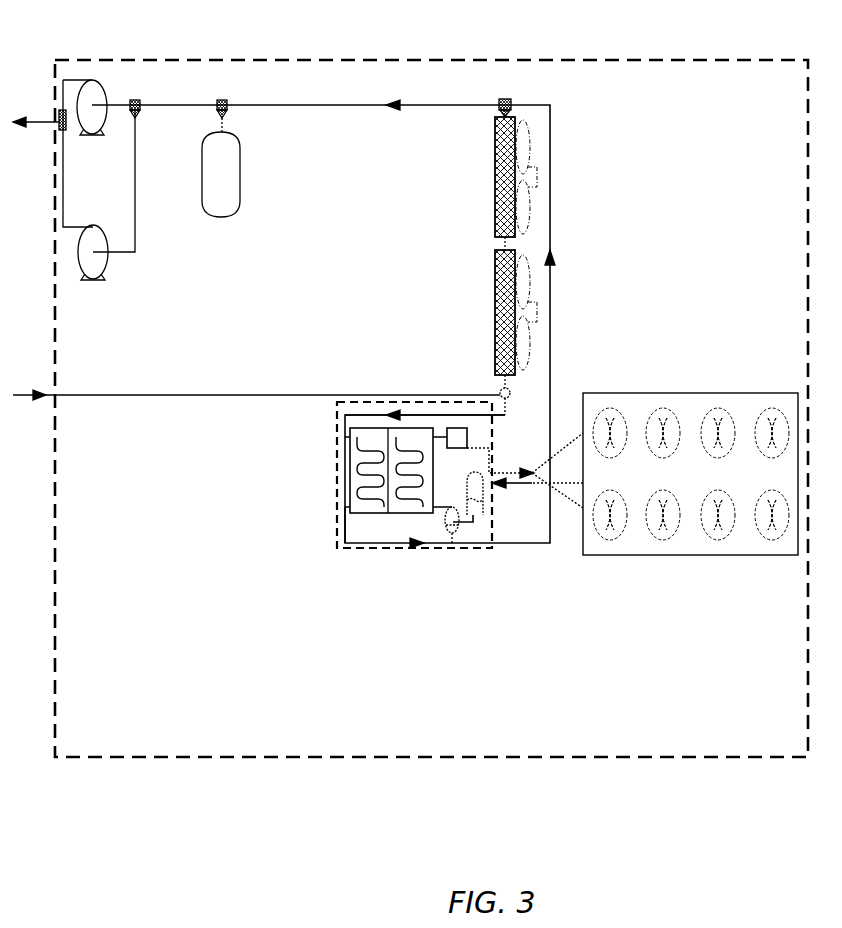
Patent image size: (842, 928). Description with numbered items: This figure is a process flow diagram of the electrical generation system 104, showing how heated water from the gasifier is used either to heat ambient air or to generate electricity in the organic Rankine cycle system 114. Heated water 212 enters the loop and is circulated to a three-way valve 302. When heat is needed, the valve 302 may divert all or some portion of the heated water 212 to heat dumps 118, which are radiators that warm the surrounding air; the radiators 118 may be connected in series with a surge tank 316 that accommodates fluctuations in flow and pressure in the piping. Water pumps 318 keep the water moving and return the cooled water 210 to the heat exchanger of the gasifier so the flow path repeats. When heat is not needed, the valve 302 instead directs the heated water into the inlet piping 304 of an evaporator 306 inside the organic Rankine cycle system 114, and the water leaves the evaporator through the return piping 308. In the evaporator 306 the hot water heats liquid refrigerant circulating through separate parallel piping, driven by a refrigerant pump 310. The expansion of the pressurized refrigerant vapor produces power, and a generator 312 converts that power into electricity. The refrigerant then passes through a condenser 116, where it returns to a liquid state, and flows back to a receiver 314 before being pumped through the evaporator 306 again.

The electrical generation system 104 is at (535, 757).
The organic Rankine cycle system 114 is at (337, 548).
The condenser 116 is at (690, 393).
The heat dumps 118 is at (495, 305).
The cooled water 210 is at (38, 122).
The heated water 212 is at (152, 395).
The three-way valve 302 is at (500, 388).
The inlet piping 304 is at (345, 416).
The evaporator 306 is at (350, 487).
The return conduit 308 is at (345, 530).
The refrigerant pump 310 is at (452, 535).
The generator 312 is at (447, 430).
The receiver 314 is at (487, 503).
The surge tank 316 is at (240, 173).
The water pumps 318 is at (103, 93).